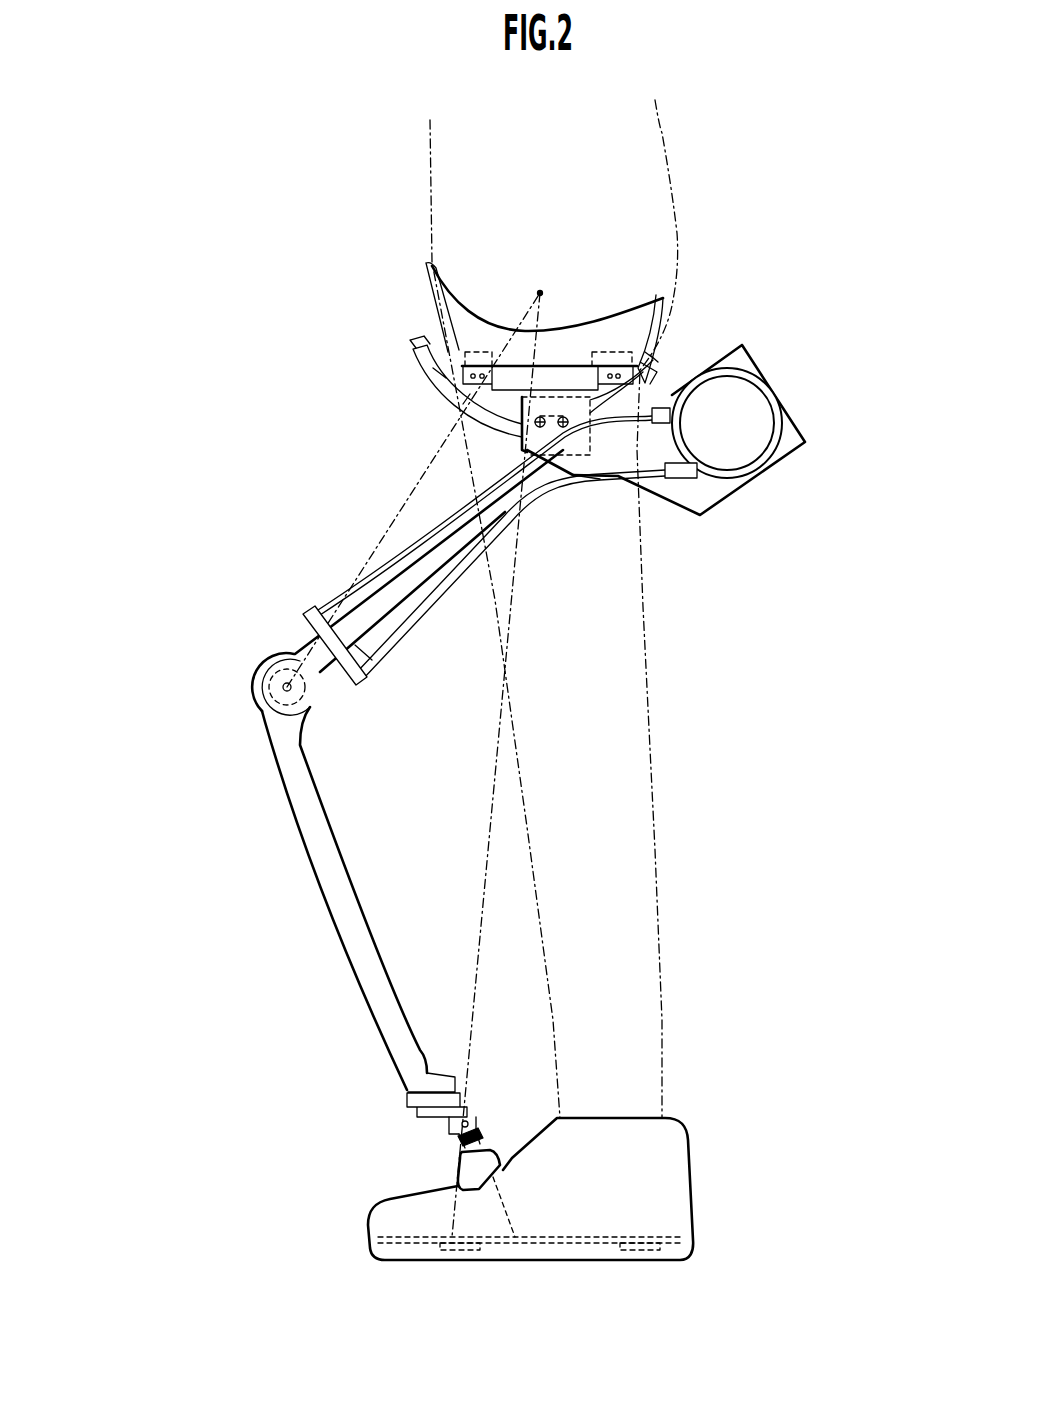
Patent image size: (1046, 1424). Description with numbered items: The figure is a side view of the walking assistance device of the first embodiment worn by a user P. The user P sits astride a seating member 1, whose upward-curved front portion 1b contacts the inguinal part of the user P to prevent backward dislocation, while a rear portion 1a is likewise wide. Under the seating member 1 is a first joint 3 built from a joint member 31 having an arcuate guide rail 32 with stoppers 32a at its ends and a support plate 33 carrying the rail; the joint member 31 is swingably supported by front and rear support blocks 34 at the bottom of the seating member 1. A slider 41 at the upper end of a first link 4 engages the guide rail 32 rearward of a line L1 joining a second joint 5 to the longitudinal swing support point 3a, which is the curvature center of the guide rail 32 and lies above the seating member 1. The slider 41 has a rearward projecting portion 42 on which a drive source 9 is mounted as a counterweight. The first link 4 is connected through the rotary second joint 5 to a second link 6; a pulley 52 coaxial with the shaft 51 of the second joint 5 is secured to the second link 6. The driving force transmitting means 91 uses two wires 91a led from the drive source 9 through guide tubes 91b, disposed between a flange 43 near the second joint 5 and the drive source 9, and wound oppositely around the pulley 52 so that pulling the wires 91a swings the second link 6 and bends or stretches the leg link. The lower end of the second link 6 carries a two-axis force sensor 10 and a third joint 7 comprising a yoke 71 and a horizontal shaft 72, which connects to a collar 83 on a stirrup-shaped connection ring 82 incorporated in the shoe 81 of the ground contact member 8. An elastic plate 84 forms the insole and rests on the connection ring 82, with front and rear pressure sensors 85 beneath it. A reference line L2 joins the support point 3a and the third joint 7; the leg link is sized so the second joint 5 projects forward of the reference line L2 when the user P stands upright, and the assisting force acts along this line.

The user P is at (663, 137).
The seating member 1 is at (546, 298).
The rear portion 1a is at (650, 310).
The front portion 1b is at (427, 266).
The first joint 3 is at (520, 349).
The longitudinal swing support point 3a is at (540, 293).
The joint member 31 is at (520, 372).
The guide rail 32 is at (520, 389).
The stopper 32a is at (420, 370).
The support plate 33 is at (517, 372).
The support block 34 is at (477, 352).
The first link 4 is at (429, 569).
The slider 41 is at (633, 498).
The projecting portion 42 is at (666, 469).
The flange 43 is at (365, 653).
The second joint 5 is at (235, 698).
The shaft 51 is at (267, 727).
The pulley 52 is at (252, 690).
The second link 6 is at (327, 853).
The third joint 7 is at (455, 1085).
The yoke 71 is at (468, 1110).
The shaft 72 is at (474, 1120).
The ground contact member 8 is at (563, 1230).
The shoe 81 is at (683, 1220).
The connection ring 82 is at (460, 1172).
The collar 83 is at (481, 1143).
The elastic plate 84 is at (557, 1247).
The pressure sensor 85 is at (447, 1250).
The drive source 9 is at (767, 400).
The driving force transmitting means 91 is at (481, 583).
The wire 91a is at (310, 620).
The guide tube 91b is at (597, 477).
The two-axis force sensor 10 is at (407, 1095).
The line L1 is at (390, 520).
The reference line L2 is at (490, 813).